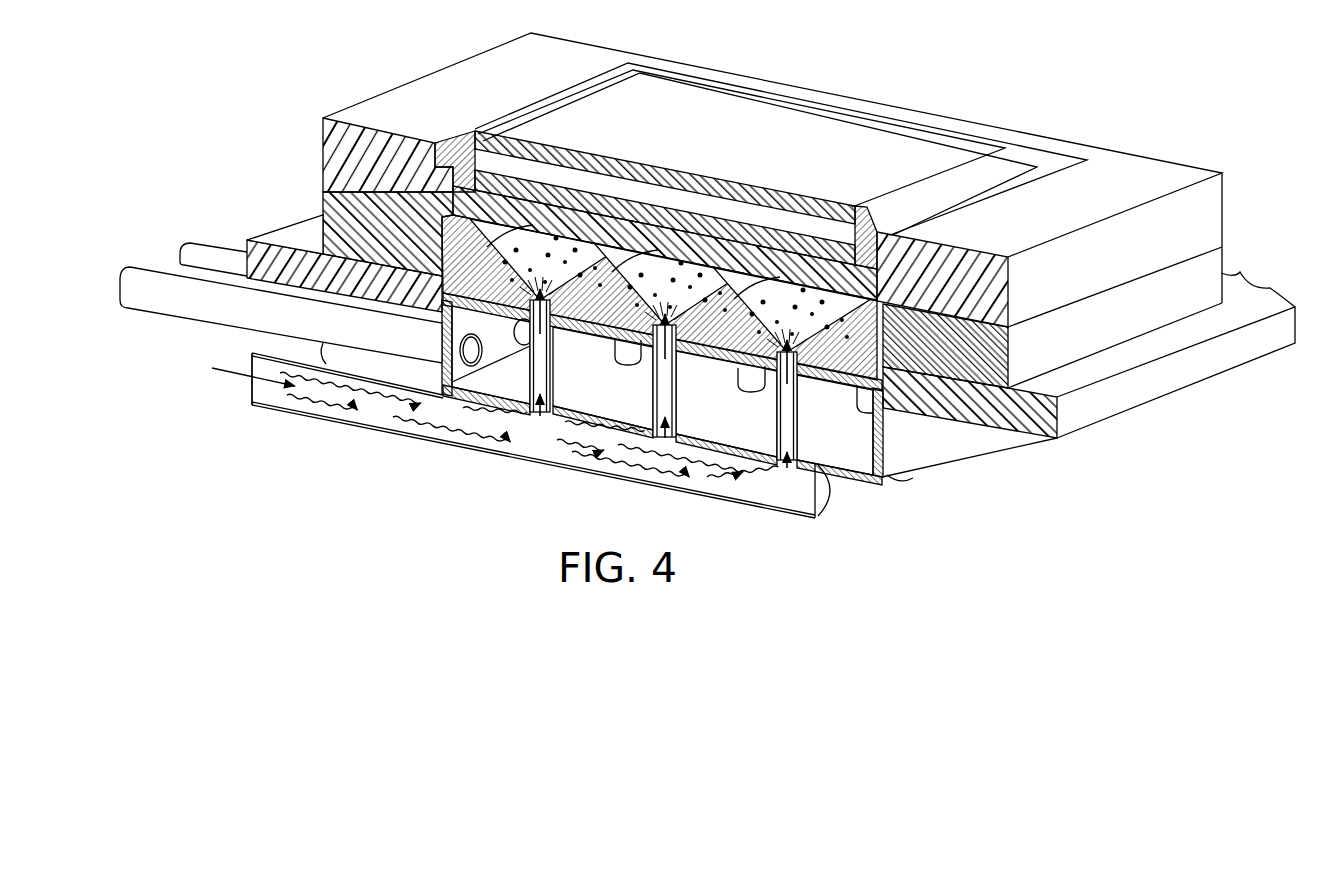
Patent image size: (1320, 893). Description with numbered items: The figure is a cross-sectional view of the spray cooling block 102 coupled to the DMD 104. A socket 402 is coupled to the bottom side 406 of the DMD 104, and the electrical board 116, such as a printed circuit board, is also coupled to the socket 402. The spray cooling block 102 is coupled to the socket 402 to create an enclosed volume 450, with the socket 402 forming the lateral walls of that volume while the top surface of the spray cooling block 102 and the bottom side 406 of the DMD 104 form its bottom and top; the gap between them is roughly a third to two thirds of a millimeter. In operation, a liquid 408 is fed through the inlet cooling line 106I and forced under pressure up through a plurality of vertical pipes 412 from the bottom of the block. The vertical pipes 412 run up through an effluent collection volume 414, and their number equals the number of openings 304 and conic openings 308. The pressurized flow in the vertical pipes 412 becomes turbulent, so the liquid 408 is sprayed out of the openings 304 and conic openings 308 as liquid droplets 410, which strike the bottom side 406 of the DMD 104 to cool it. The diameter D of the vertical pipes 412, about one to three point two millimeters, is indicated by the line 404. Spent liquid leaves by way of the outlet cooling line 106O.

The spray cooling block 102 is at (933, 445).
The DMD 104 is at (883, 132).
The outlet cooling line 106O is at (182, 252).
The inlet cooling line 106I is at (250, 397).
The electrical board 116 is at (262, 230).
The openings 304 is at (596, 222).
The conic openings 308 is at (556, 252).
The socket 402 is at (330, 222).
The line 404 is at (503, 373).
The bottom side of the DMD 406 is at (470, 226).
The liquid 408 is at (410, 412).
The liquid droplets 410 is at (535, 281).
The vertical pipes 412 is at (524, 357).
The effluent collection volume 414 is at (637, 404).
The enclosed volume 450 is at (887, 340).